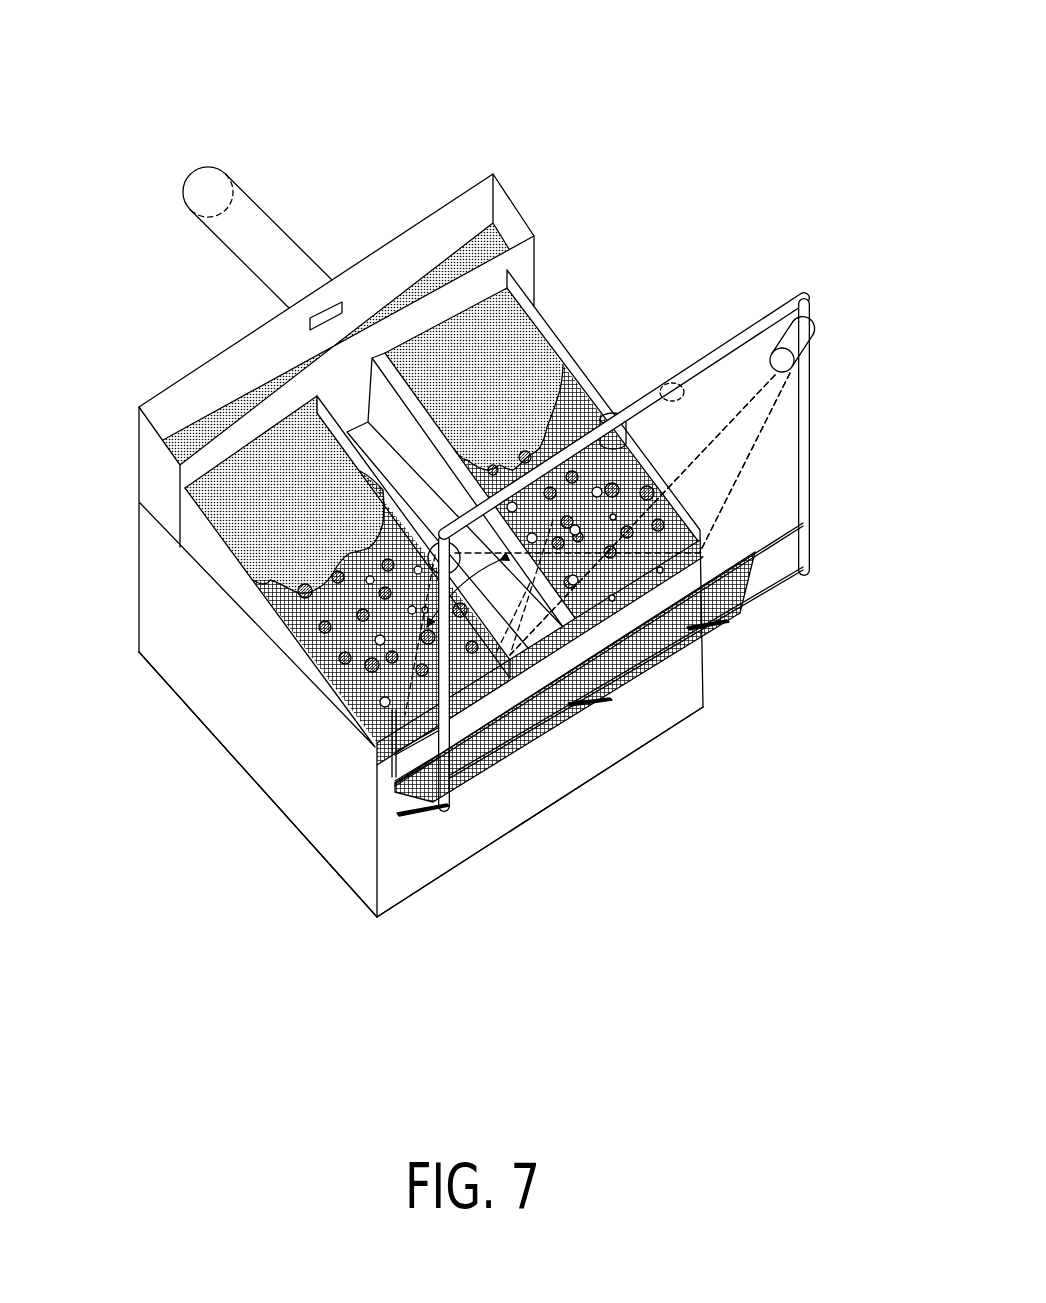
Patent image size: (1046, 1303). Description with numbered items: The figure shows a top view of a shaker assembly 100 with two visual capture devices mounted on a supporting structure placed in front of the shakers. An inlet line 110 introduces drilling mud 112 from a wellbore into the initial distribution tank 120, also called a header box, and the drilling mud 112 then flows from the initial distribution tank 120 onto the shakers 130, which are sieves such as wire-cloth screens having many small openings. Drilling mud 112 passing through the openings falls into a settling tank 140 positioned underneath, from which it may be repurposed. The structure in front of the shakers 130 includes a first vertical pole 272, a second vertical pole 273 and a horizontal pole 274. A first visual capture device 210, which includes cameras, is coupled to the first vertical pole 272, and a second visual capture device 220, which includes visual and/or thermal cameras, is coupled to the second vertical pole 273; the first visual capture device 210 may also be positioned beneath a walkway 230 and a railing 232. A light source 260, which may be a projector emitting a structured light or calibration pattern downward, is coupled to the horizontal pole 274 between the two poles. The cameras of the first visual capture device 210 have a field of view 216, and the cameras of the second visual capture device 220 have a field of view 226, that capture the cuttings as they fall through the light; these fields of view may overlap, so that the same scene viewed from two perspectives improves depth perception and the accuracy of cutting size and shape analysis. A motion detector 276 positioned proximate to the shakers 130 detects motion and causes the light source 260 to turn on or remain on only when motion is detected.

The shaker assembly 100 is at (330, 70).
The inlet line 110 is at (273, 233).
The drilling mud 112 is at (441, 273).
The initial distribution tank 120 is at (150, 467).
The shakers 130 is at (193, 550).
The settling tank 140 is at (238, 682).
The first visual capture device 210 is at (453, 587).
The field of view 216 is at (465, 567).
The second visual capture device 220 is at (813, 353).
The field of view 226 is at (735, 480).
The walkway 230 is at (740, 613).
The railing 232 is at (800, 565).
The light source 260 is at (617, 413).
The first vertical pole 272 is at (443, 808).
The second vertical pole 273 is at (805, 490).
The horizontal pole 274 is at (757, 330).
The motion detector 276 is at (668, 378).